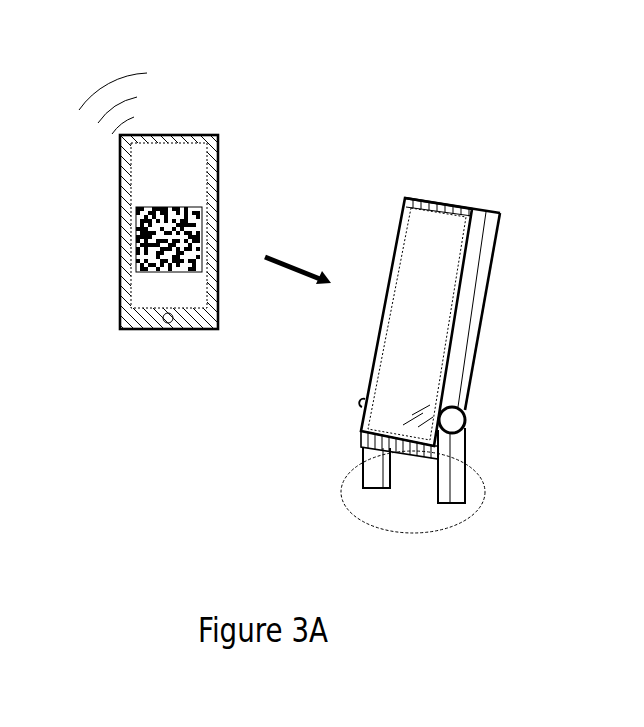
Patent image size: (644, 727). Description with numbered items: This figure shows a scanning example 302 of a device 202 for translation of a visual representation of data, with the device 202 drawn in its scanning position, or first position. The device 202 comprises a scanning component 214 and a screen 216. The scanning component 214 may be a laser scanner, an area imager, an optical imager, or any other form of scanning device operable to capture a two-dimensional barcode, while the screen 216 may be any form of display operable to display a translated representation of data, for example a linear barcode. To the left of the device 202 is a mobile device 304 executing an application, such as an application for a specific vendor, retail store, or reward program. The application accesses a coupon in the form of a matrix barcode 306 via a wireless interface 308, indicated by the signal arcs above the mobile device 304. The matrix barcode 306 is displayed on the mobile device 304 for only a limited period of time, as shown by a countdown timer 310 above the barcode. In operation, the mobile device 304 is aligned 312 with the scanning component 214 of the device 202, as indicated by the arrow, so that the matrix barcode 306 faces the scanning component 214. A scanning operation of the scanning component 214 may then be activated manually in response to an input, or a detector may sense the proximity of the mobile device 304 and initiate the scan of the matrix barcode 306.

The scanning example 302 is at (397, 104).
The device 202 is at (448, 203).
The scanning component 214 is at (435, 336).
The screen 216 is at (518, 265).
The mobile device 304 is at (122, 163).
The matrix barcode 306 is at (162, 280).
The wireless interface 308 is at (120, 75).
The countdown timer 310 is at (176, 156).
The aligned 312 is at (290, 262).